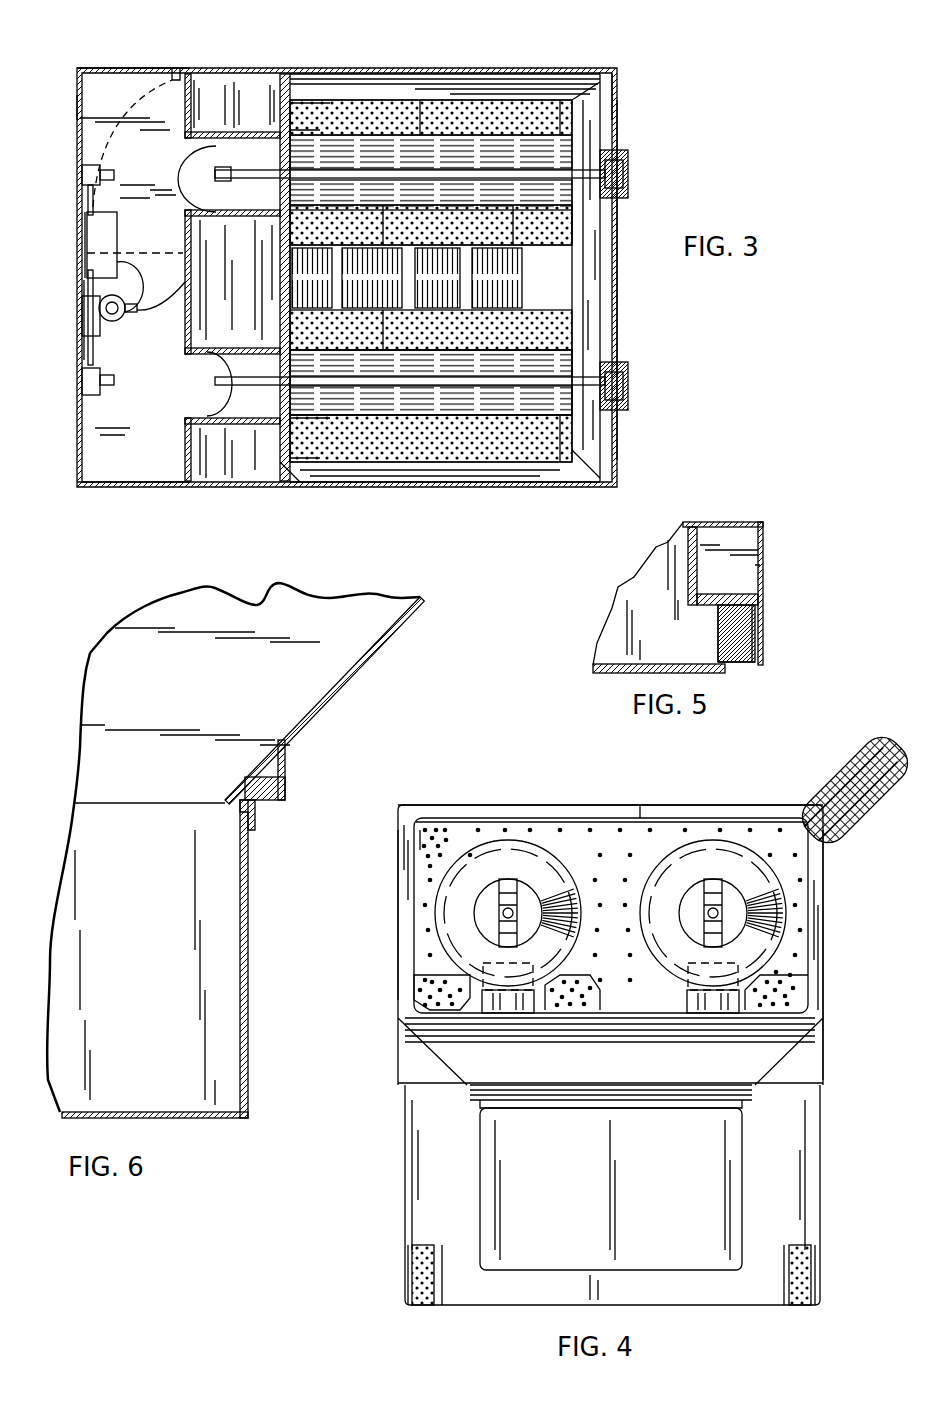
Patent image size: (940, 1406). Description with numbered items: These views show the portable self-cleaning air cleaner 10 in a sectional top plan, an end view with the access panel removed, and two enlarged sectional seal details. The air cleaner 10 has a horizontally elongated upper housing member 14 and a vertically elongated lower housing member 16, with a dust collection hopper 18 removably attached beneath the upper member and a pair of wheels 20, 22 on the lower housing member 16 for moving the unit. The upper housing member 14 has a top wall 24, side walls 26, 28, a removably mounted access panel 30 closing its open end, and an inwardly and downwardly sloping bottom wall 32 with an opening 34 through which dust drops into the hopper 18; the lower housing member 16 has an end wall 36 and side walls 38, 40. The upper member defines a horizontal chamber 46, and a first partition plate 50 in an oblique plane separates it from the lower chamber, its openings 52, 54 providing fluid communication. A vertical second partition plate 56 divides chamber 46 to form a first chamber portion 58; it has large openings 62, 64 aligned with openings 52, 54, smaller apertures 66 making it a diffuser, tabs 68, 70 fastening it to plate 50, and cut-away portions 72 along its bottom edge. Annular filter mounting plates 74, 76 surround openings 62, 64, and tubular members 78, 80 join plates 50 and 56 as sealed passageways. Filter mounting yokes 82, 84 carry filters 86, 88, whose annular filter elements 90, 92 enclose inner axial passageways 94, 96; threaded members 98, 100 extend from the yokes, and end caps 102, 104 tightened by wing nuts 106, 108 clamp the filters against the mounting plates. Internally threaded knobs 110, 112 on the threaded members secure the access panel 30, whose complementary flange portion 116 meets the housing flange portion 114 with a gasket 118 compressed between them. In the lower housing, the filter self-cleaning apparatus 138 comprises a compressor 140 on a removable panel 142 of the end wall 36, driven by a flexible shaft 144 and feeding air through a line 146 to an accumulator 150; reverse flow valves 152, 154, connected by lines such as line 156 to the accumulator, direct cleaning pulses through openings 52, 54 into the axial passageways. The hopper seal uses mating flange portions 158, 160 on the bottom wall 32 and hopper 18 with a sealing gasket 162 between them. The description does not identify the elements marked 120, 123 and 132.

In FIG. 3, the portable self-cleaning air cleaner 10 is at (695, 72).
In FIG. 4, the portable self-cleaning air cleaner 10 is at (568, 792).
In FIG. 3, the upper housing member 14 is at (480, 66).
In FIG. 4, the upper housing member 14 is at (640, 805).
In FIG. 3, the lower housing member 16 is at (115, 496).
In FIG. 4, the lower housing member 16 is at (396, 1170).
In FIG. 6, the dust collection hopper 18 is at (257, 1014).
In FIG. 4, the dust collection hopper 18 is at (473, 1188).
In FIG. 4, the wheel 20 is at (424, 1246).
In FIG. 4, the wheel 22 is at (794, 1246).
In FIG. 4, the top wall 24 is at (680, 805).
In FIG. 3, the side wall 26 is at (410, 487).
In FIG. 4, the side wall 26 is at (398, 934).
In FIG. 3, the side wall 28 is at (410, 68).
In FIG. 4, the side wall 28 is at (823, 936).
In FIG. 3, the access panel 30 is at (624, 292).
In FIG. 5, the access panel 30 is at (772, 545).
In FIG. 6, the bottom wall 32 is at (340, 690).
In FIG. 4, the bottom wall 32 is at (625, 1062).
In FIG. 3, the opening 34 is at (505, 288).
In FIG. 6, the opening 34 is at (156, 806).
In FIG. 3, the end wall 36 is at (77, 100).
In FIG. 3, the side wall 38 is at (80, 488).
In FIG. 3, the side wall 40 is at (123, 68).
In FIG. 3, the chamber 46 is at (550, 70).
In FIG. 4, the chamber 46 is at (700, 828).
In FIG. 3, the first partition plate 50 is at (187, 444).
In FIG. 3, the opening 52 is at (207, 410).
In FIG. 3, the opening 54 is at (218, 178).
In FIG. 3, the second partition plate 56 is at (292, 72).
In FIG. 4, the second partition plate 56 is at (476, 824).
In FIG. 3, the first chamber portion 58 is at (230, 88).
In FIG. 3, the large opening 62 is at (272, 338).
In FIG. 3, the large opening 64 is at (260, 128).
In FIG. 3, the smaller apertures 66 is at (294, 487).
In FIG. 4, the smaller apertures 66 is at (608, 830).
In FIG. 4, the tab 68 is at (508, 1015).
In FIG. 4, the tab 70 is at (706, 1015).
In FIG. 4, the cut-away portion 72 is at (466, 1015).
In FIG. 3, the filter mounting plate 74 is at (290, 440).
In FIG. 4, the filter mounting plate 74 is at (508, 912).
In FIG. 3, the filter mounting plate 76 is at (290, 125).
In FIG. 4, the filter mounting plate 76 is at (713, 912).
In FIG. 3, the tubular member 78 is at (254, 428).
In FIG. 3, the tubular member 80 is at (215, 130).
In FIG. 3, the filter mounting yoke 82 is at (470, 394).
In FIG. 4, the filter mounting yoke 82 is at (508, 913).
In FIG. 3, the filter mounting yoke 84 is at (490, 172).
In FIG. 4, the filter mounting yoke 84 is at (713, 913).
In FIG. 3, the filter 86 is at (535, 438).
In FIG. 4, the filter 86 is at (554, 924).
In FIG. 3, the filter 88 is at (536, 117).
In FIG. 4, the filter 88 is at (762, 924).
In FIG. 3, the annular filter element 90 is at (485, 464).
In FIG. 3, the annular filter element 92 is at (497, 110).
In FIG. 3, the inner axial passageway 94 is at (392, 446).
In FIG. 3, the inner axial passageway 96 is at (425, 131).
In FIG. 3, the threaded member 98 is at (628, 384).
In FIG. 4, the threaded member 98 is at (532, 888).
In FIG. 3, the threaded member 100 is at (628, 176).
In FIG. 4, the threaded member 100 is at (742, 888).
In FIG. 3, the end cap 102 is at (572, 330).
In FIG. 3, the end cap 104 is at (570, 228).
In FIG. 3, the wing nut 106 is at (431, 383).
In FIG. 3, the wing nut 108 is at (575, 188).
In FIG. 3, the internally threaded knob 110 is at (628, 396).
In FIG. 3, the internally threaded knob 112 is at (628, 160).
In FIG. 5, the flange portion 114 is at (716, 632).
In FIG. 4, the flange portion 114 is at (432, 814).
In FIG. 5, the complementary flange portion 116 is at (762, 622).
In FIG. 5, the gasket 118 is at (745, 664).
In FIG. 4, the hose 120 is at (822, 792).
In FIG. 3, the lid path 123 is at (77, 122).
In FIG. 3, the latch recess 132 is at (195, 158).
In FIG. 3, the filter self-cleaning apparatus 138 is at (75, 306).
In FIG. 3, the compressor 140 is at (120, 322).
In FIG. 3, the panel 142 is at (77, 420).
In FIG. 3, the flexible shaft 144 is at (205, 305).
In FIG. 3, the line 146 is at (138, 285).
In FIG. 3, the accumulator 150 is at (117, 240).
In FIG. 3, the reverse flow valve 152 is at (82, 382).
In FIG. 3, the reverse flow valve 154 is at (82, 175).
In FIG. 3, the line 156 is at (82, 335).
In FIG. 6, the flange portion 158 is at (288, 770).
In FIG. 6, the flange portion 160 is at (256, 806).
In FIG. 6, the sealing gasket 162 is at (286, 790).